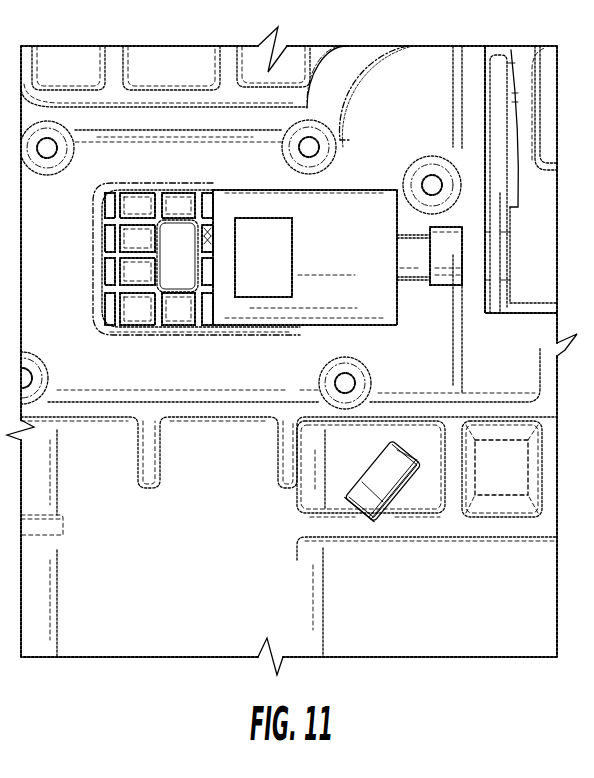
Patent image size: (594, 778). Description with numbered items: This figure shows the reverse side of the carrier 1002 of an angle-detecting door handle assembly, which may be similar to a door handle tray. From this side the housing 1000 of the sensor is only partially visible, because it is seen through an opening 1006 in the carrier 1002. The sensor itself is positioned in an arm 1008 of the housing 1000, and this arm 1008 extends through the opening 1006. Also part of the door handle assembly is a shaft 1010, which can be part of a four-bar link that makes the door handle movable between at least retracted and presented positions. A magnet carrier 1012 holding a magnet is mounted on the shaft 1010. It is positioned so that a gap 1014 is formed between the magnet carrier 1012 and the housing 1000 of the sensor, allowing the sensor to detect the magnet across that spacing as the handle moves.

The housing 1000 is at (133, 203).
The carrier 1002 is at (168, 550).
The opening 1006 is at (103, 273).
The arm 1008 is at (163, 239).
The shaft 1010 is at (449, 268).
The magnet carrier 1012 is at (237, 320).
The gap 1014 is at (208, 230).